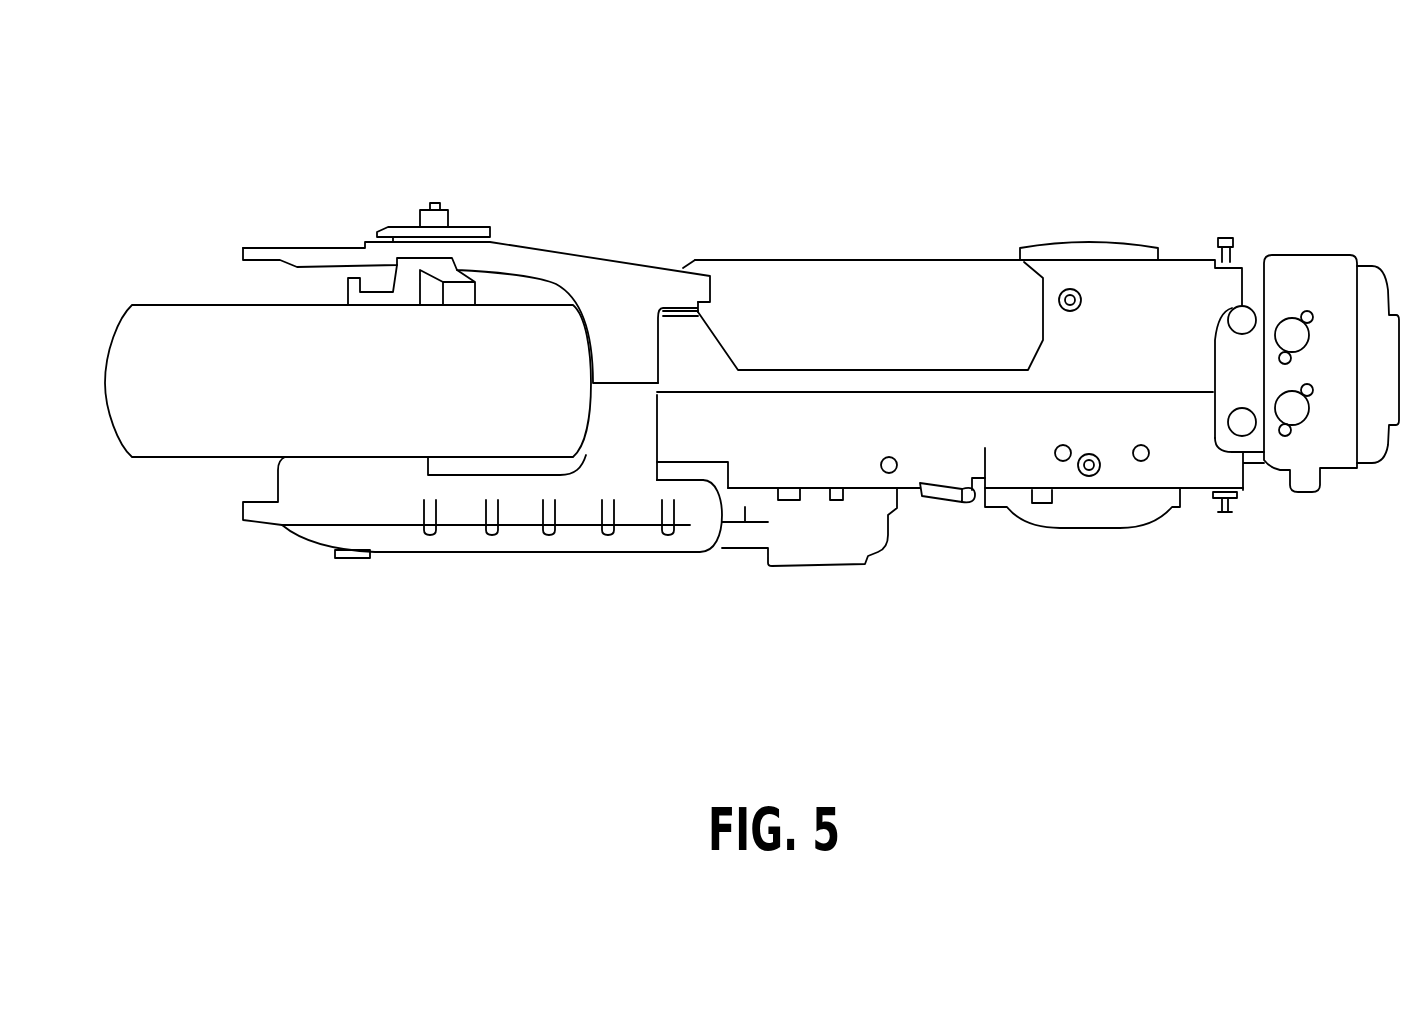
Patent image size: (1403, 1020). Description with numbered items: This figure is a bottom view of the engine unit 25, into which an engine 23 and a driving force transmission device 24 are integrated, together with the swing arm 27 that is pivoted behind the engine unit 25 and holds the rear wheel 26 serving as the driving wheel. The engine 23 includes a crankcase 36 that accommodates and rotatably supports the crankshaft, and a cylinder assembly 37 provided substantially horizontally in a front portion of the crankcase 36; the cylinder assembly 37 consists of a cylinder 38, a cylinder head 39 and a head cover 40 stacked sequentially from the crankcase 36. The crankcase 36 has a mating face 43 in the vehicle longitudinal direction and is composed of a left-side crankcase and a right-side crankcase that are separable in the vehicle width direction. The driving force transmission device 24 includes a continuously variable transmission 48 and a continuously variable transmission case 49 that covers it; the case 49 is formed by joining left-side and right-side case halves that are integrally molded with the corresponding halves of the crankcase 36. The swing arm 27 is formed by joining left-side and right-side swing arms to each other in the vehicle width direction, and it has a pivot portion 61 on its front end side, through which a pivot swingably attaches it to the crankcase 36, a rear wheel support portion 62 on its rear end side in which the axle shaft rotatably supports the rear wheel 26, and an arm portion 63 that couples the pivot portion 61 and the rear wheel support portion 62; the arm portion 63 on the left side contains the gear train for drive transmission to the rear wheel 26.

The engine 23 is at (1323, 668).
The driving force transmission device 24 is at (820, 573).
The engine unit 25 is at (930, 508).
The rear wheel 26 is at (163, 445).
The swing arm 27 is at (523, 255).
The crankcase 36 is at (1132, 290).
The cylinder assembly 37 is at (1390, 615).
The cylinder 38 is at (1233, 443).
The cylinder head 39 is at (1307, 470).
The head cover 40 is at (1373, 447).
The mating face 43 is at (1060, 390).
The continuously variable transmission 48 is at (905, 272).
The continuously variable transmission case 49 is at (816, 275).
The pivot portion 61 is at (665, 283).
The rear wheel support portion 62 is at (407, 253).
The arm portion 63 is at (580, 262).